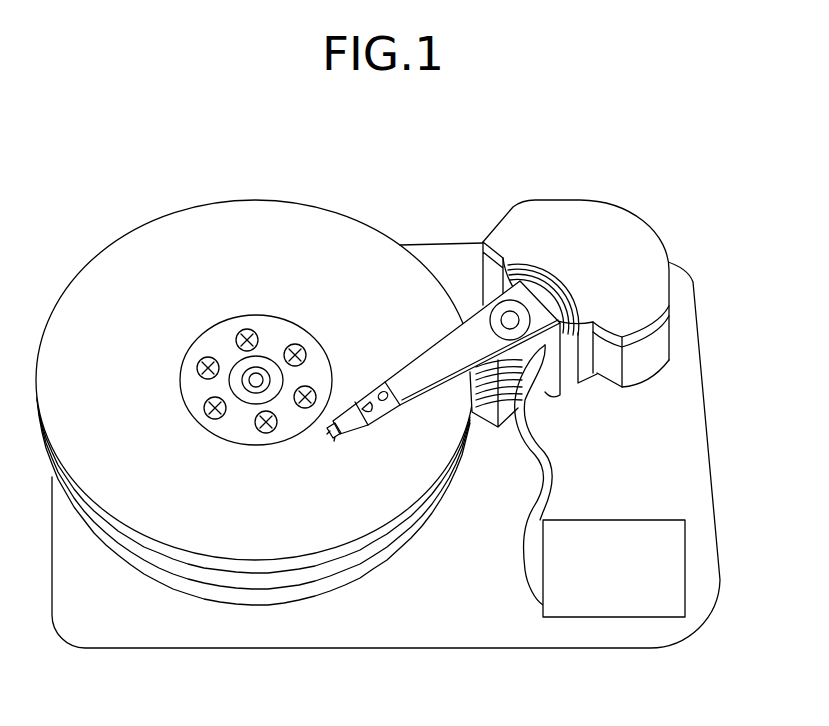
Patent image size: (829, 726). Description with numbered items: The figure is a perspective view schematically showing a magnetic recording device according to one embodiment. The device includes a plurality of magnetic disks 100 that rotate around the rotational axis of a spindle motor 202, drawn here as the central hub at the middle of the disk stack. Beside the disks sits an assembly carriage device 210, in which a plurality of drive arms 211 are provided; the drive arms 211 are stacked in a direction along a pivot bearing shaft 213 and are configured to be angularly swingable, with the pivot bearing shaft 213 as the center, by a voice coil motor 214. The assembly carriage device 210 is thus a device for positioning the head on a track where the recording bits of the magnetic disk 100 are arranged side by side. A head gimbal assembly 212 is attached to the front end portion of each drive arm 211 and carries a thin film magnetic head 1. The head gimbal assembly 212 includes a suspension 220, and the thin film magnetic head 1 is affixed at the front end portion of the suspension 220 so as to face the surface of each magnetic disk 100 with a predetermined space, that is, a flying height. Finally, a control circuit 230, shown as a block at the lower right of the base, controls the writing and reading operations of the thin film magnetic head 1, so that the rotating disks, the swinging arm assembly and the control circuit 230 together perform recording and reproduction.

The magnetic disk 100 is at (118, 223).
The spindle motor 202 is at (258, 378).
The assembly carriage device 210 is at (592, 220).
The drive arm 211 is at (433, 355).
The head gimbal assembly 212 is at (348, 405).
The pivot bearing shaft 213 is at (508, 318).
The voice coil motor 214 is at (583, 372).
The suspension 220 is at (355, 423).
The control circuit 230 is at (618, 620).
The thin film magnetic head 1 is at (337, 437).